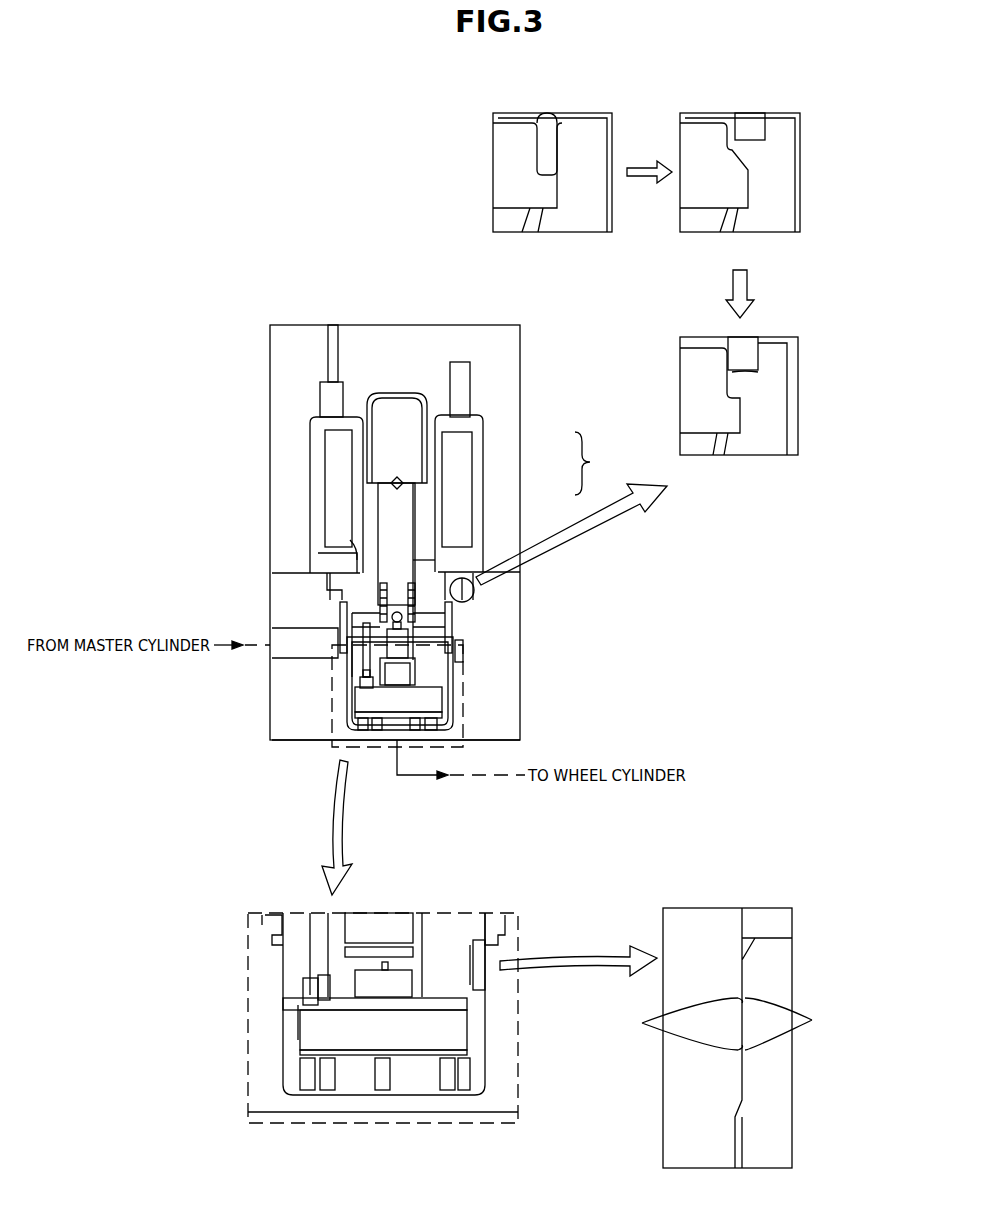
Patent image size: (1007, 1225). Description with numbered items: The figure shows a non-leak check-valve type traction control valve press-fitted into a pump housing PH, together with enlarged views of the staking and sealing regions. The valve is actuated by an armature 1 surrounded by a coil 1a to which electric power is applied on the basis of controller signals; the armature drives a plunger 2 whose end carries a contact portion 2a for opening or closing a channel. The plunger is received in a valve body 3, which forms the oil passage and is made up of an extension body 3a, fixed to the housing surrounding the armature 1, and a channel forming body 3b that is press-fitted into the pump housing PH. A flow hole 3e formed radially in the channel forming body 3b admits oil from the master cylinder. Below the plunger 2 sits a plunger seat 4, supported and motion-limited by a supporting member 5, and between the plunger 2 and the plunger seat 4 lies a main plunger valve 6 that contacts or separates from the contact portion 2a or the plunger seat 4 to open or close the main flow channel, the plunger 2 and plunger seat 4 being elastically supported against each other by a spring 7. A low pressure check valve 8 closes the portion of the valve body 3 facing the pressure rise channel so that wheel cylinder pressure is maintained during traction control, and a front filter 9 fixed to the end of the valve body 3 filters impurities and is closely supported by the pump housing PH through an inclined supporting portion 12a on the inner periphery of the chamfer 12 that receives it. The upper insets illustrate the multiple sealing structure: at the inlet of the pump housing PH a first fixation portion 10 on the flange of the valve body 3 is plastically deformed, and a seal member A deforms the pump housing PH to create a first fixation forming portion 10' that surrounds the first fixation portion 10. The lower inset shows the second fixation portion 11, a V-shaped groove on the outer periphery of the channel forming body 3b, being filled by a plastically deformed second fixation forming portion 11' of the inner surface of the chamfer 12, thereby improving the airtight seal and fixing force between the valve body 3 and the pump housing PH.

The armature 1 is at (397, 402).
The coil 1a is at (337, 448).
The plunger 2 is at (392, 507).
The contact portion 2a is at (350, 545).
The valve body 3 is at (218, 962).
The extension body 3a is at (425, 515).
The channel forming body 3b is at (458, 562).
The flow hole 3e is at (432, 625).
The plunger seat 4 is at (405, 647).
The supporting member 5 is at (370, 660).
The main plunger valve 6 is at (370, 620).
The spring 7 is at (383, 600).
The low pressure check valve 8 is at (360, 683).
The front filter 9 is at (415, 700).
The first fixation portion 10 is at (594, 408).
The first fixation forming portion 10' is at (790, 384).
The second fixation portion 11 is at (599, 845).
The second fixation forming portion 11' is at (795, 1024).
The chamfer 12 is at (383, 1087).
The inclined supporting portion 12a is at (480, 1090).
The seal member A is at (541, 120).
The pump housing PH is at (285, 705).